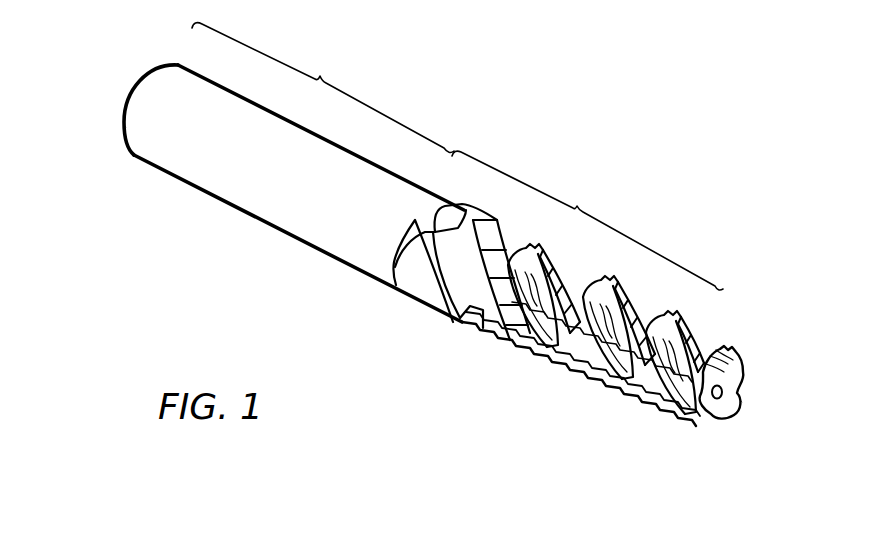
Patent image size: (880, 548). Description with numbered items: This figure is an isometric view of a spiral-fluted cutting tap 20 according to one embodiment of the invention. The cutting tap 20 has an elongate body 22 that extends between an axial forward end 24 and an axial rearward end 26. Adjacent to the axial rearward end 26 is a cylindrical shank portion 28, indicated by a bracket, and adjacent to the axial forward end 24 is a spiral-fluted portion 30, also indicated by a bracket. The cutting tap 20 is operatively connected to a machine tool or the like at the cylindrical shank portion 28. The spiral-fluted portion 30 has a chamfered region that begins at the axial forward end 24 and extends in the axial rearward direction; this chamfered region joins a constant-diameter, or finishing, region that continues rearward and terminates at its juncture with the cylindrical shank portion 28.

The cutting tap 20 is at (389, 263).
The elongate body 22 is at (299, 193).
The axial forward end 24 is at (747, 396).
The axial rearward end 26 is at (123, 110).
The cylindrical shank portion 28 is at (323, 88).
The spiral-fluted portion 30 is at (558, 288).